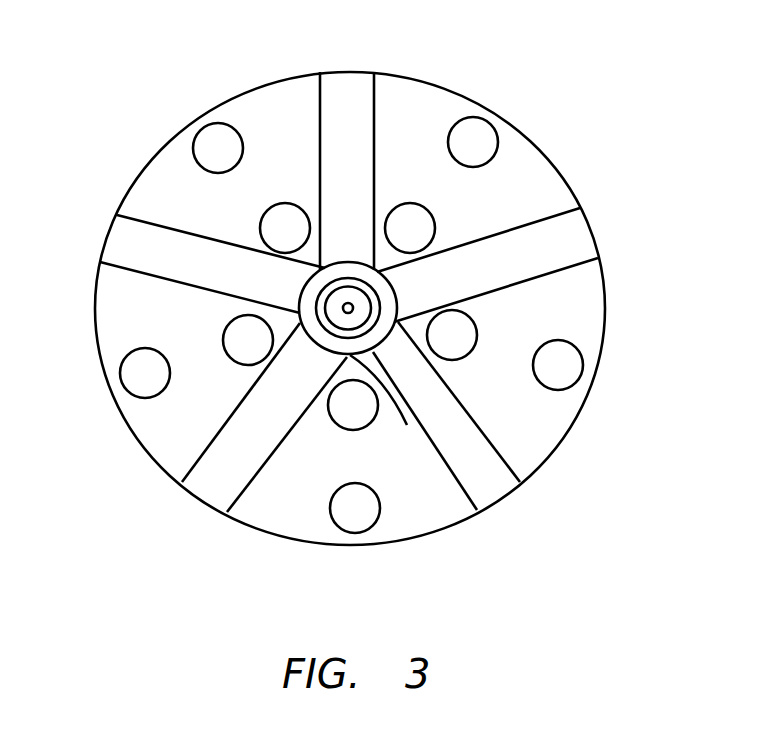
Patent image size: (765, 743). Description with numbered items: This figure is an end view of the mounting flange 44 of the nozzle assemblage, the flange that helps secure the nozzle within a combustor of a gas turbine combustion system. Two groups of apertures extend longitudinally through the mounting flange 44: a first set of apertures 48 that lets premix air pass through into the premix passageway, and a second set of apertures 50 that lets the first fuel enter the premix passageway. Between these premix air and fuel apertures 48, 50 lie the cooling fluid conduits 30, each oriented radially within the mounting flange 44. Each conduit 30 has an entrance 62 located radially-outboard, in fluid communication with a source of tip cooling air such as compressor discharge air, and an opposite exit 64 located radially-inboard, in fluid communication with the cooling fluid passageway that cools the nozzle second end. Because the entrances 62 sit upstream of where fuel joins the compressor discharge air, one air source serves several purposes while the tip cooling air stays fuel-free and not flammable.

The conduit 30 is at (350, 88).
The mounting flange 44 is at (592, 90).
The first set of apertures 48 is at (218, 123).
The second set of apertures 50 is at (283, 205).
The entrance 62 is at (100, 255).
The exit 64 is at (407, 425).